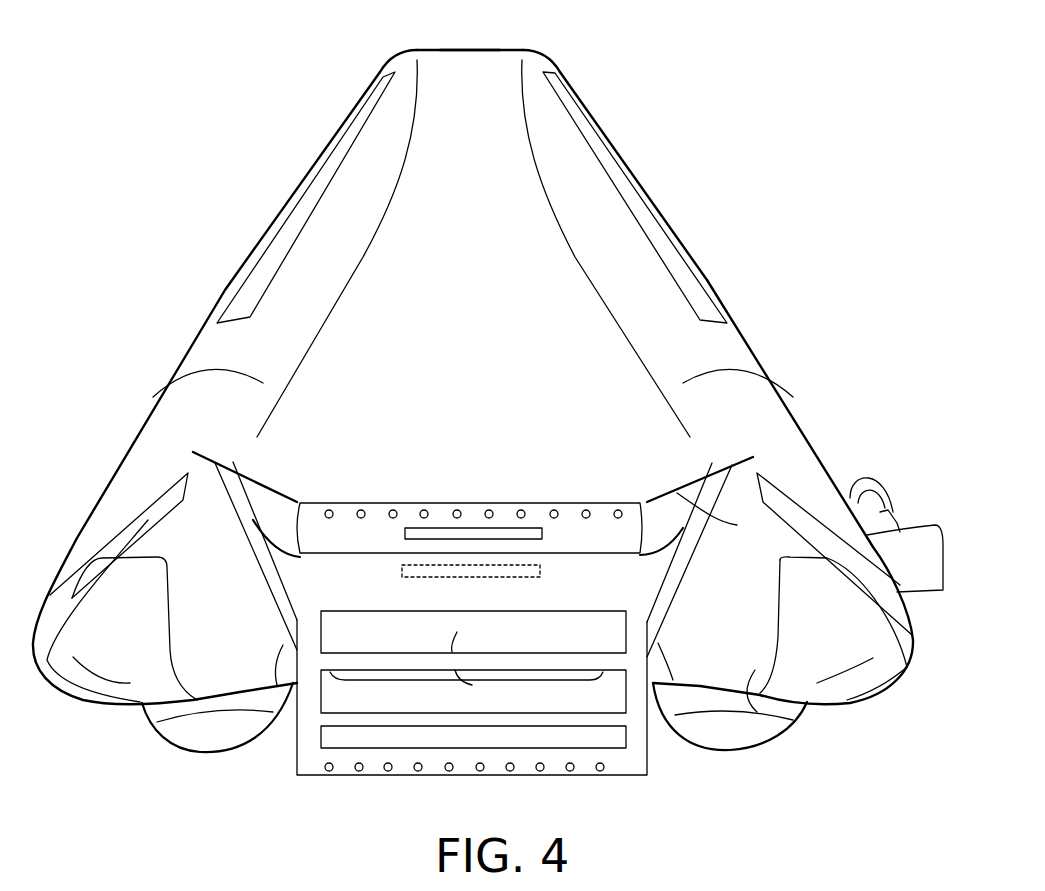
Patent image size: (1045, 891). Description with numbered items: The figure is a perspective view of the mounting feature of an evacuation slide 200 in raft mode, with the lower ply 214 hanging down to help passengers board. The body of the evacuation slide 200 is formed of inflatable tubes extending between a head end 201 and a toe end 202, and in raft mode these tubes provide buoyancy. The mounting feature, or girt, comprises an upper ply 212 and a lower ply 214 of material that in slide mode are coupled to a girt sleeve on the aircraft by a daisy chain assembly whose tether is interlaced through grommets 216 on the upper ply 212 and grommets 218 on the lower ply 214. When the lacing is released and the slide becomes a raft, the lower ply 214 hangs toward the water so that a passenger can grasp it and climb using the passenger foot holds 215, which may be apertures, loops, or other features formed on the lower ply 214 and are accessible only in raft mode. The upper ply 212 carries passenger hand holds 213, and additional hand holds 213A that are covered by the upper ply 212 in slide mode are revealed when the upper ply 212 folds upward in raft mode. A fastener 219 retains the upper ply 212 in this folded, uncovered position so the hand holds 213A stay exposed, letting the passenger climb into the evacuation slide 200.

The evacuation slide 200 is at (210, 68).
The head end 201 is at (752, 670).
The toe end 202 is at (500, 50).
The upper ply 212 is at (625, 527).
The passenger hand hold 213 is at (518, 533).
The passenger hand hold 213A is at (460, 567).
The lower ply 214 is at (638, 753).
The passenger foot hold 215 is at (382, 700).
The grommet 216 is at (391, 512).
The grommet 218 is at (600, 771).
The fastener 219 is at (270, 490).